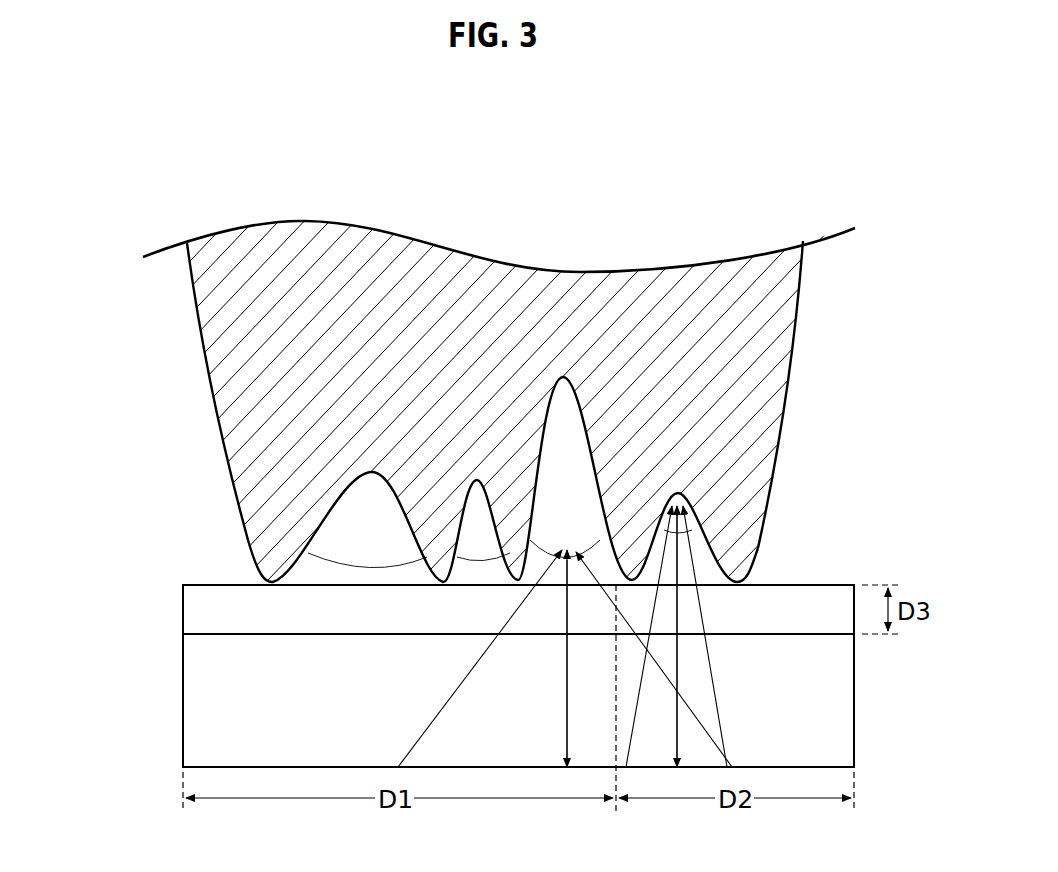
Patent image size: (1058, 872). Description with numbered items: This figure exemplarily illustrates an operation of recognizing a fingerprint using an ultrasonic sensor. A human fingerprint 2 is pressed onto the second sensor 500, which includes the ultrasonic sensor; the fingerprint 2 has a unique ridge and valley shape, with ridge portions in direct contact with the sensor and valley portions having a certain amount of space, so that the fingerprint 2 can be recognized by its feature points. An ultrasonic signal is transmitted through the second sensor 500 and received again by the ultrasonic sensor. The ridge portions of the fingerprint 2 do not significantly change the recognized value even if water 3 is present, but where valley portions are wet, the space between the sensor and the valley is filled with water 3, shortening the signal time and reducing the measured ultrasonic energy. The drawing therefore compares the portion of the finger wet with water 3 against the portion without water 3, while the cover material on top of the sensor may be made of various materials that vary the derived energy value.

The human fingerprint 2 is at (757, 377).
The water 3 is at (370, 495).
The second sensor 500 is at (177, 662).